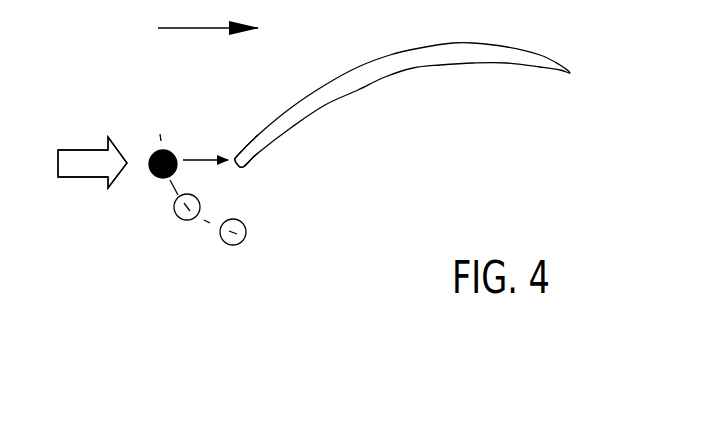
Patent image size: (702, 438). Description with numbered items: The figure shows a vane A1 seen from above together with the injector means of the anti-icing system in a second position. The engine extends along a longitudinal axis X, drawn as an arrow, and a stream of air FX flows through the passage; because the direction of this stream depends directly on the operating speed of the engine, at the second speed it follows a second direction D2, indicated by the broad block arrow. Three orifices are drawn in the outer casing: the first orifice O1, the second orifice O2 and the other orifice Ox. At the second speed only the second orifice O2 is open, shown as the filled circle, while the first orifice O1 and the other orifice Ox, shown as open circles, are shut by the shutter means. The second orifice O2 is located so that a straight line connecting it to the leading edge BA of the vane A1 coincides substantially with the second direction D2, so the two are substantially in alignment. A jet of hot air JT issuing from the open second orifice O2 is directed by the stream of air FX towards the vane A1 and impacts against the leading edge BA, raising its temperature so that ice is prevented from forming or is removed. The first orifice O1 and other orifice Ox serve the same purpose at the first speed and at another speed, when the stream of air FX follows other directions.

The longitudinal axis X is at (208, 14).
The stream of air FX is at (91, 155).
The second direction D2 is at (91, 171).
The second orifice O2 is at (155, 150).
The jet of hot air JT is at (205, 152).
The vane A1 is at (413, 65).
The leading edge BA is at (240, 165).
The first orifice O1 is at (177, 218).
The other orifice Ox is at (240, 247).